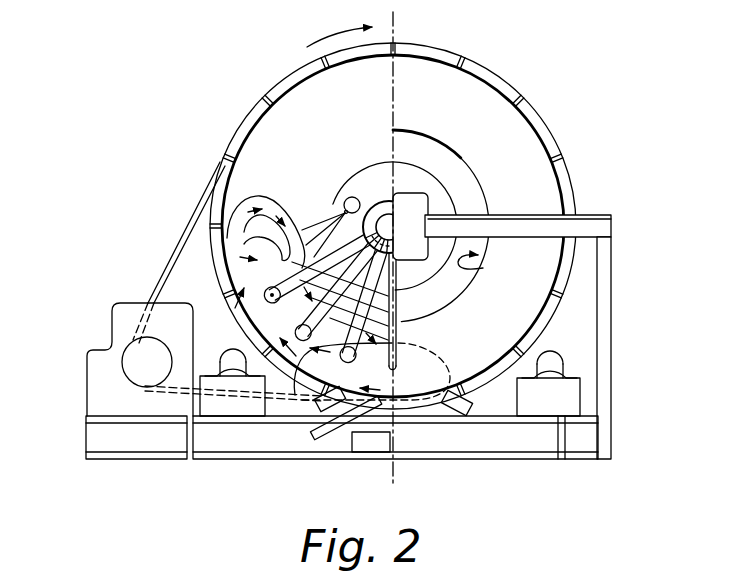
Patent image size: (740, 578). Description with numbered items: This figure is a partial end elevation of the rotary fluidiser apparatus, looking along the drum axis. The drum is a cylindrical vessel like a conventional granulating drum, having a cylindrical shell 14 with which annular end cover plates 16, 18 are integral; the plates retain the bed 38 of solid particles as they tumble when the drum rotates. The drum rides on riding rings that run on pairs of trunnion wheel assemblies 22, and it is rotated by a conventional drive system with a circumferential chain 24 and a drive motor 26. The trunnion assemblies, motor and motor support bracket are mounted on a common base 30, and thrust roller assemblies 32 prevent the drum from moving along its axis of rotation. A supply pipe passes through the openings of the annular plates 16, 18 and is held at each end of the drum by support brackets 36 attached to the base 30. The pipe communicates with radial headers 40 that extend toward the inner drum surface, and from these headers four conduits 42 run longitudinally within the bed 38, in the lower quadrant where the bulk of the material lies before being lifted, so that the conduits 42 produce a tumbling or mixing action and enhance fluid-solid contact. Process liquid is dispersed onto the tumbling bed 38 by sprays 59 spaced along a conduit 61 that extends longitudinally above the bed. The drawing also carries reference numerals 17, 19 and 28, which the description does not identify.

The cylindrical shell 14 is at (290, 81).
The annular end cover plate 16 is at (350, 125).
The annular end cover plate 18 is at (468, 125).
The rotation direction arrow 17 is at (364, 174).
The rotation direction arrow 19 is at (483, 268).
The trunnion wheel assemblies 22 is at (212, 340).
The circumferential chain 24 is at (196, 216).
The drive motor 26 is at (105, 372).
The base 28 is at (122, 440).
The common base 30 is at (230, 443).
The thrust roller assemblies 32 is at (336, 408).
The support brackets 36 is at (588, 231).
The bed of solid particles 38 is at (378, 370).
The radial headers 40 is at (323, 222).
The conduits 42 is at (264, 293).
The sprays 59 is at (343, 203).
The conduit 61 is at (305, 233).